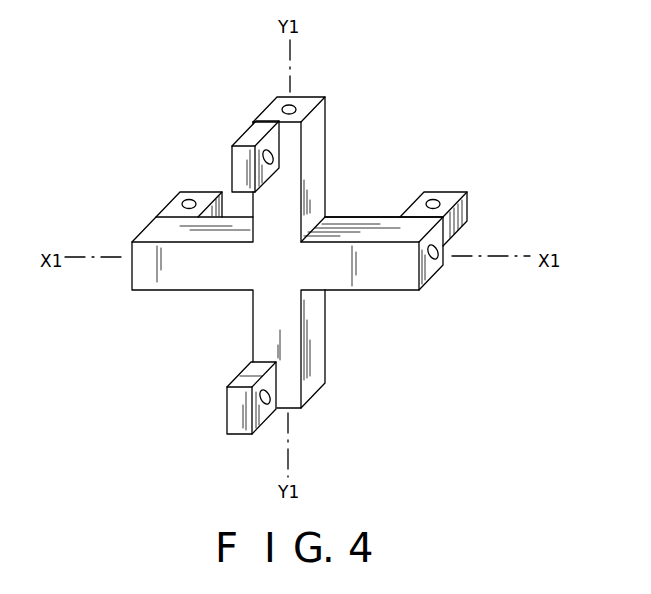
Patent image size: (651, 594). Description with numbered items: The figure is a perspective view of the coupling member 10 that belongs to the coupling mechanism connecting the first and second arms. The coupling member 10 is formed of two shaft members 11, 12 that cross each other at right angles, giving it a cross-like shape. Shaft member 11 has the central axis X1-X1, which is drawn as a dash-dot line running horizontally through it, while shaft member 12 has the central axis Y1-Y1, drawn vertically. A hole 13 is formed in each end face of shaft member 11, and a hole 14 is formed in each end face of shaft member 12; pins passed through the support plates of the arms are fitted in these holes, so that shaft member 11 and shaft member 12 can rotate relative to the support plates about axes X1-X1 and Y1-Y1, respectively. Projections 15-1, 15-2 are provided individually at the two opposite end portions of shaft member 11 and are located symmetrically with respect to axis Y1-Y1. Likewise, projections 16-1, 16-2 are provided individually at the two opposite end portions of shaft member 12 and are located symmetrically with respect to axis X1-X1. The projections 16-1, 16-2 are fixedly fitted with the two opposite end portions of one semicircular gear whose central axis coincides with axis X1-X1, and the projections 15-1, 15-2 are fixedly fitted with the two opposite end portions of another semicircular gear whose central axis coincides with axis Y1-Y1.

The coupling member 10 is at (353, 291).
The shaft member 11 is at (212, 282).
The shaft member 12 is at (316, 175).
The hole 13 is at (436, 270).
The hole 14 is at (299, 97).
The projection 15-1 is at (167, 205).
The projection 15-2 is at (447, 200).
The projection 16-1 is at (240, 140).
The projection 16-2 is at (253, 432).